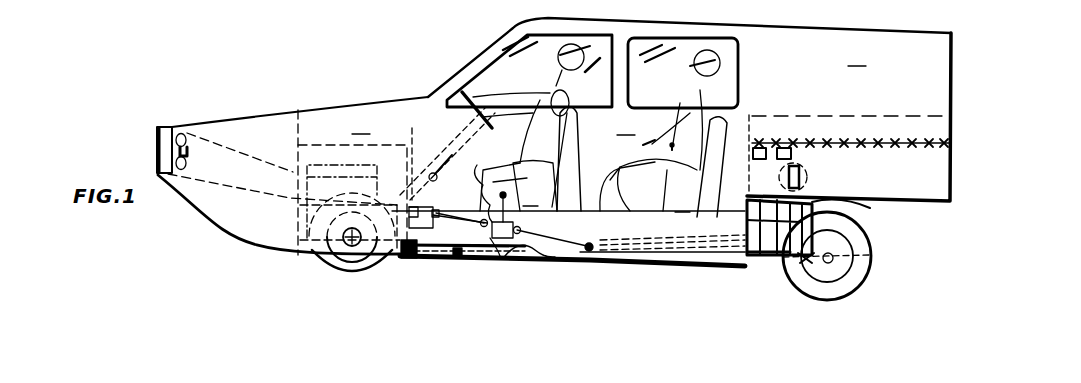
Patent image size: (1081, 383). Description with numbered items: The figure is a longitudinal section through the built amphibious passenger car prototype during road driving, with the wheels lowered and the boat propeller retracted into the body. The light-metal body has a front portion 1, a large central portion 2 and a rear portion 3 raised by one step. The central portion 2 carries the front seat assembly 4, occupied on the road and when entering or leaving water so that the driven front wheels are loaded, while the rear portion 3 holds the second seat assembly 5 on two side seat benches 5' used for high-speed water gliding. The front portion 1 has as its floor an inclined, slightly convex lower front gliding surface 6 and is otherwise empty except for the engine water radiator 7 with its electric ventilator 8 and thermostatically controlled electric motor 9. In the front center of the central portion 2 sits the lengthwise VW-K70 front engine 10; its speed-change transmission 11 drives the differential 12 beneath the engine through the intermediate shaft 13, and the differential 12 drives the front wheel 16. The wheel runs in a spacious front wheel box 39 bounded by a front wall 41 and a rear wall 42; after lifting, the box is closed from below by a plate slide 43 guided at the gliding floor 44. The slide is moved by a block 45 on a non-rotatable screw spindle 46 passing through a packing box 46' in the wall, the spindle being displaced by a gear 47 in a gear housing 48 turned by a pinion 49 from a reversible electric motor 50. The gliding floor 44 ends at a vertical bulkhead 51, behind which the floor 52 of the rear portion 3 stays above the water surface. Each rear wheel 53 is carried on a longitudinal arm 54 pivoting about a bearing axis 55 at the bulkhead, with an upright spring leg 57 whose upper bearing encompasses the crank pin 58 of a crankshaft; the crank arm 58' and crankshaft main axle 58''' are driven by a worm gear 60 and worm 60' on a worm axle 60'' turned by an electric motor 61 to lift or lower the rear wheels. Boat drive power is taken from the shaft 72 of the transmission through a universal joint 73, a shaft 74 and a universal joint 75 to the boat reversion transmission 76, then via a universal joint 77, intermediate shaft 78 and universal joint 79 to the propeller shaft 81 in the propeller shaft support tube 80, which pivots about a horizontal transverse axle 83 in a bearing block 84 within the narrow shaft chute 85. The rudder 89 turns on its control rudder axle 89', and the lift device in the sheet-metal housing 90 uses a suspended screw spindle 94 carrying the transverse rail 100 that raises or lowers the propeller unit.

The front portion 1 is at (265, 120).
The central portion 2 is at (493, 124).
The rear portion 3 is at (851, 80).
The front seat assembly 4 is at (568, 203).
The second seat assembly 5 is at (851, 99).
The side seat benches 5' is at (960, 163).
The lower front gliding surface 6 is at (214, 224).
The engine water radiator 7 is at (160, 127).
The electric ventilator 8 is at (182, 133).
The electric motor 9 is at (190, 142).
The passenger car front engine 10 is at (330, 160).
The speed-change transmission 11 is at (400, 205).
The differential 12 is at (332, 252).
The intermediate shaft 13 is at (392, 262).
The front wheel 16 is at (336, 274).
The front wheel box 39 is at (345, 162).
The front wall 41 is at (297, 205).
The rear wall 42 is at (405, 198).
The plate slide 43 is at (535, 268).
The gliding floor 44 is at (625, 268).
The block 45 is at (405, 262).
The screw spindle 46 is at (634, 309).
The packing box 46' is at (437, 315).
The gear 47 is at (560, 270).
The gear housing 48 is at (580, 270).
The pinion 49 is at (596, 266).
The reversible electric motor 50 is at (510, 268).
The bulkhead 51 is at (750, 268).
The floor 52 is at (955, 205).
The rear wheel 53 is at (860, 273).
The longitudinal arm 54 is at (815, 298).
The bearing axis 55 is at (775, 268).
The spring leg 57 is at (855, 206).
The crank pin 58 is at (838, 175).
The crank arm 58' is at (861, 126).
The crankshaft main axle 58''' is at (860, 108).
The worm gear 60 is at (836, 116).
The worm 60' is at (816, 102).
The worm axle 60'' is at (801, 98).
The electric motor 61 is at (757, 145).
The shaft 72 is at (440, 183).
The universal joint 73 is at (462, 262).
The shaft 74 is at (492, 268).
The universal joint 75 is at (514, 207).
The boat reversion transmission 76 is at (513, 211).
The universal joint 77 is at (585, 180).
The intermediate shaft 78 is at (630, 170).
The universal joint 79 is at (632, 163).
The propeller shaft support tube 80 is at (748, 268).
The propeller shaft 81 is at (690, 266).
The horizontal transverse axle 83 is at (665, 270).
The bearing block 84 is at (645, 287).
The shaft chute 85 is at (683, 104).
The rudder 89 is at (921, 225).
The control rudder axle 89' is at (880, 318).
The sheet-metal housing 90 is at (743, 197).
The screw spindle 94 is at (800, 290).
The transverse rail 100 is at (746, 201).